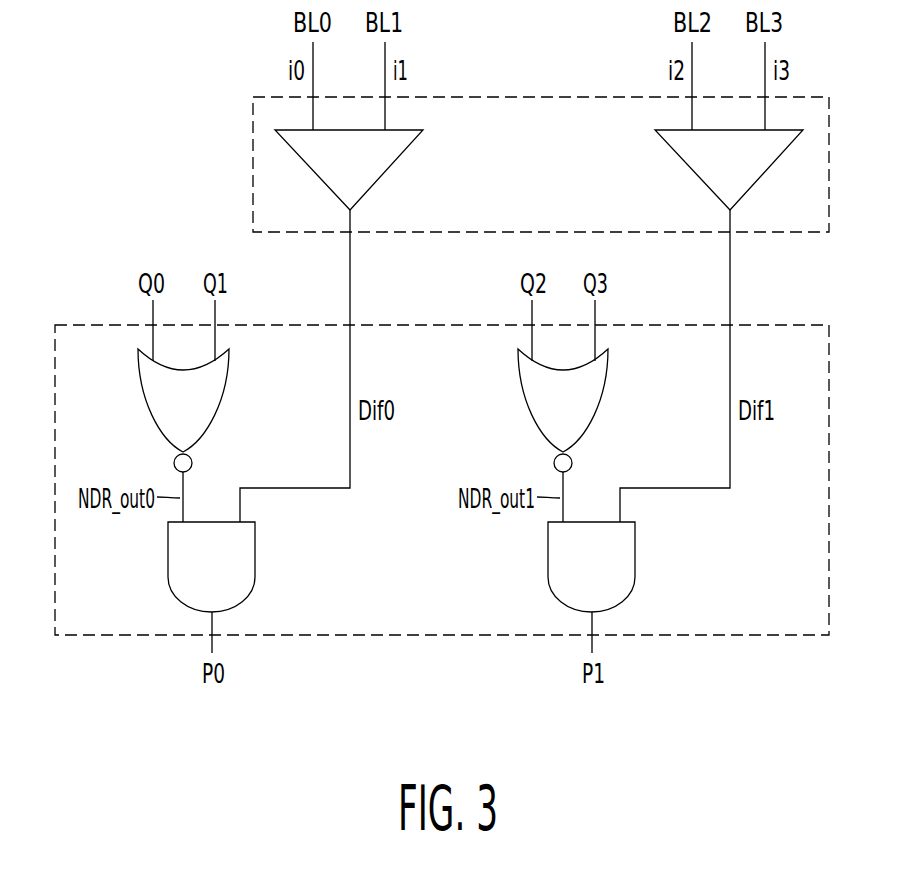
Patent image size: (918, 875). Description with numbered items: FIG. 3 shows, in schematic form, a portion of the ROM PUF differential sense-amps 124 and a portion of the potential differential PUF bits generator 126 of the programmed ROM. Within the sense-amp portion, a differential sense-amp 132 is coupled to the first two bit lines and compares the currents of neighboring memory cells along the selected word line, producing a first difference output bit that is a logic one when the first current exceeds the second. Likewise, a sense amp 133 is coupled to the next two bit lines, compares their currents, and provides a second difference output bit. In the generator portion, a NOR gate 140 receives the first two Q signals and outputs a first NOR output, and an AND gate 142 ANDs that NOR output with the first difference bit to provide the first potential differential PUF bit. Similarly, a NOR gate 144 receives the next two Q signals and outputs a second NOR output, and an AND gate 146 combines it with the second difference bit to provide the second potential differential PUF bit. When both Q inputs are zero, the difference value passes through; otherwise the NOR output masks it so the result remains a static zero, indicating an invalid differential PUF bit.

The ROM PUF differential sense-amps 124 is at (253, 182).
The potential differential PUF bits generator 126 is at (712, 635).
The differential sense-amp 132 is at (375, 183).
The sense amp 133 is at (700, 180).
The NOR gate 140 is at (223, 407).
The AND gate 142 is at (257, 558).
The NOR gate 144 is at (602, 407).
The AND gate 146 is at (637, 562).